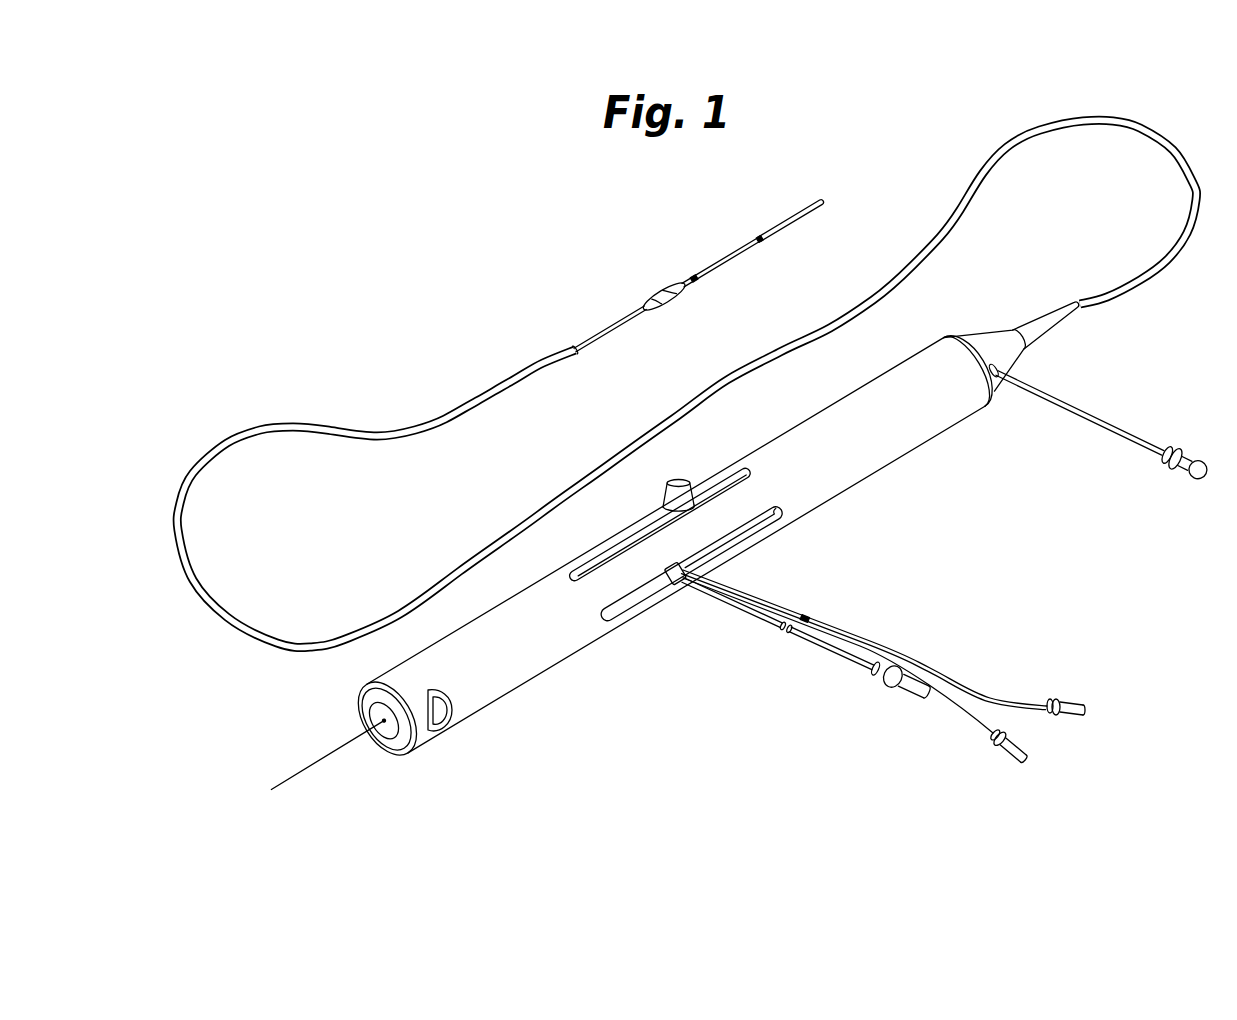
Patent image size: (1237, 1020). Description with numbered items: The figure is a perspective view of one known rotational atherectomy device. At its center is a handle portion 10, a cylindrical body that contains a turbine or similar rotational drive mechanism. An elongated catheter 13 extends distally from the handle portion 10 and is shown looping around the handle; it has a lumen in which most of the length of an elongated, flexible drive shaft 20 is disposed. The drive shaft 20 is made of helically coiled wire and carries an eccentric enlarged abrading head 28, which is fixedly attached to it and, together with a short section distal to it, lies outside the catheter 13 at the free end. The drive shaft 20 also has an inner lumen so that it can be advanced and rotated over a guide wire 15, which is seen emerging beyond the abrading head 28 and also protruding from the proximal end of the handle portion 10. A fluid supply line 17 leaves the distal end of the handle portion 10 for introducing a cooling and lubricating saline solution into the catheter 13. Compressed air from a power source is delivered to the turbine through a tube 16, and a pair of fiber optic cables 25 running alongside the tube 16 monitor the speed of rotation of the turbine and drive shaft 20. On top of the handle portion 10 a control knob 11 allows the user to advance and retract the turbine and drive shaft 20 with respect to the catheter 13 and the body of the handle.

The handle portion 10 is at (851, 412).
The control knob 11 is at (678, 478).
The catheter 13 is at (977, 168).
The guide wire 15 is at (736, 252).
The tube 16 is at (757, 607).
The fluid supply line 17 is at (1068, 398).
The drive shaft 20 is at (580, 324).
The fiber optic cables 25 is at (780, 594).
The abrading head 28 is at (675, 268).